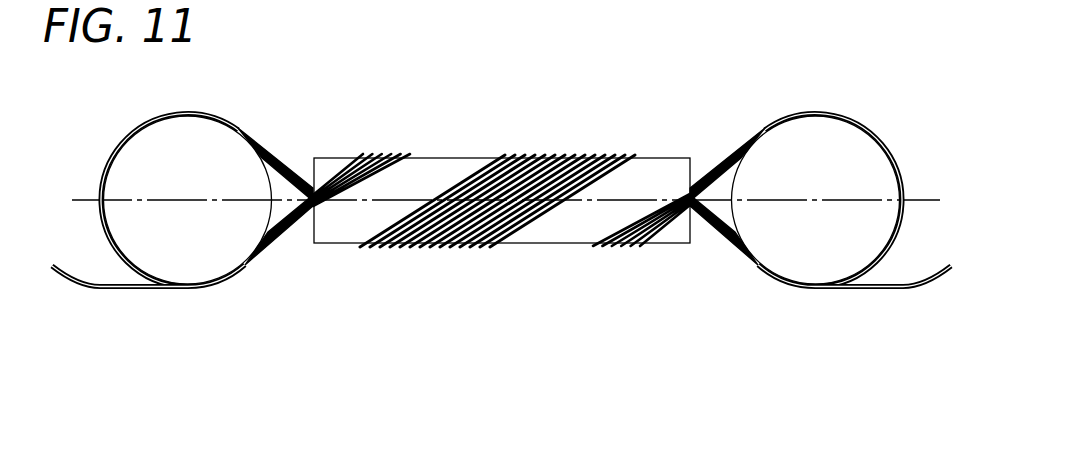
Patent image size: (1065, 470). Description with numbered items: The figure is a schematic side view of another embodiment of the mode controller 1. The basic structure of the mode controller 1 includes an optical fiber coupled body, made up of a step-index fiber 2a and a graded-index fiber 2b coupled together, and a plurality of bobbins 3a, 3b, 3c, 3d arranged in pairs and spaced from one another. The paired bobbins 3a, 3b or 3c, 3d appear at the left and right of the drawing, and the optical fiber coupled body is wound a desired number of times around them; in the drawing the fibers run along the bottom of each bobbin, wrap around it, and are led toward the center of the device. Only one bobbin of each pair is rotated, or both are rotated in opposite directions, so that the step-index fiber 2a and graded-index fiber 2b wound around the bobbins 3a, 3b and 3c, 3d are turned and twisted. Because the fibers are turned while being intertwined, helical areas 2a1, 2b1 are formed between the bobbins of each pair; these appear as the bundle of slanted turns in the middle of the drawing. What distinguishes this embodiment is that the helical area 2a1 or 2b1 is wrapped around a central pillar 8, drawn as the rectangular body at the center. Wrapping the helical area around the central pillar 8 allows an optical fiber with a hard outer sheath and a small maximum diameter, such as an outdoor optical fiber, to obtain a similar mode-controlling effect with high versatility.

The mode controller 1 is at (508, 101).
The step-index fiber 2a is at (890, 289).
The graded-index fiber 2b is at (883, 276).
The helical area 2a1 is at (420, 260).
The helical area 2b1 is at (497, 201).
The bobbin 3a is at (188, 137).
The bobbin 3b is at (813, 140).
The bobbin 3c is at (186, 200).
The bobbin 3d is at (817, 200).
The central pillar 8 is at (568, 228).